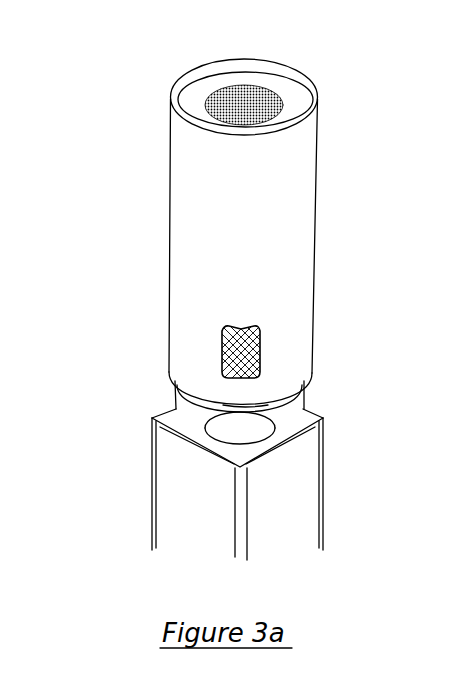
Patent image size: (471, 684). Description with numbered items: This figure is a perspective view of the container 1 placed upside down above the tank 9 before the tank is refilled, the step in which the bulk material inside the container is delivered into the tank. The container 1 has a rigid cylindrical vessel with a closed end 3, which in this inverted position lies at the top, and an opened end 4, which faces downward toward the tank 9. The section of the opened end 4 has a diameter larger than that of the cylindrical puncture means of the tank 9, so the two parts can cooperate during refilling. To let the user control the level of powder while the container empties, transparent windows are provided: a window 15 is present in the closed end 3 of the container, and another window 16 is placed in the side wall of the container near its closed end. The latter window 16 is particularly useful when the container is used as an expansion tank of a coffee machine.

The container 1 is at (195, 261).
The closed end 3 is at (297, 100).
The window 15 is at (245, 100).
The window 16 is at (223, 350).
The opened end 4 is at (300, 378).
The tank 9 is at (193, 514).